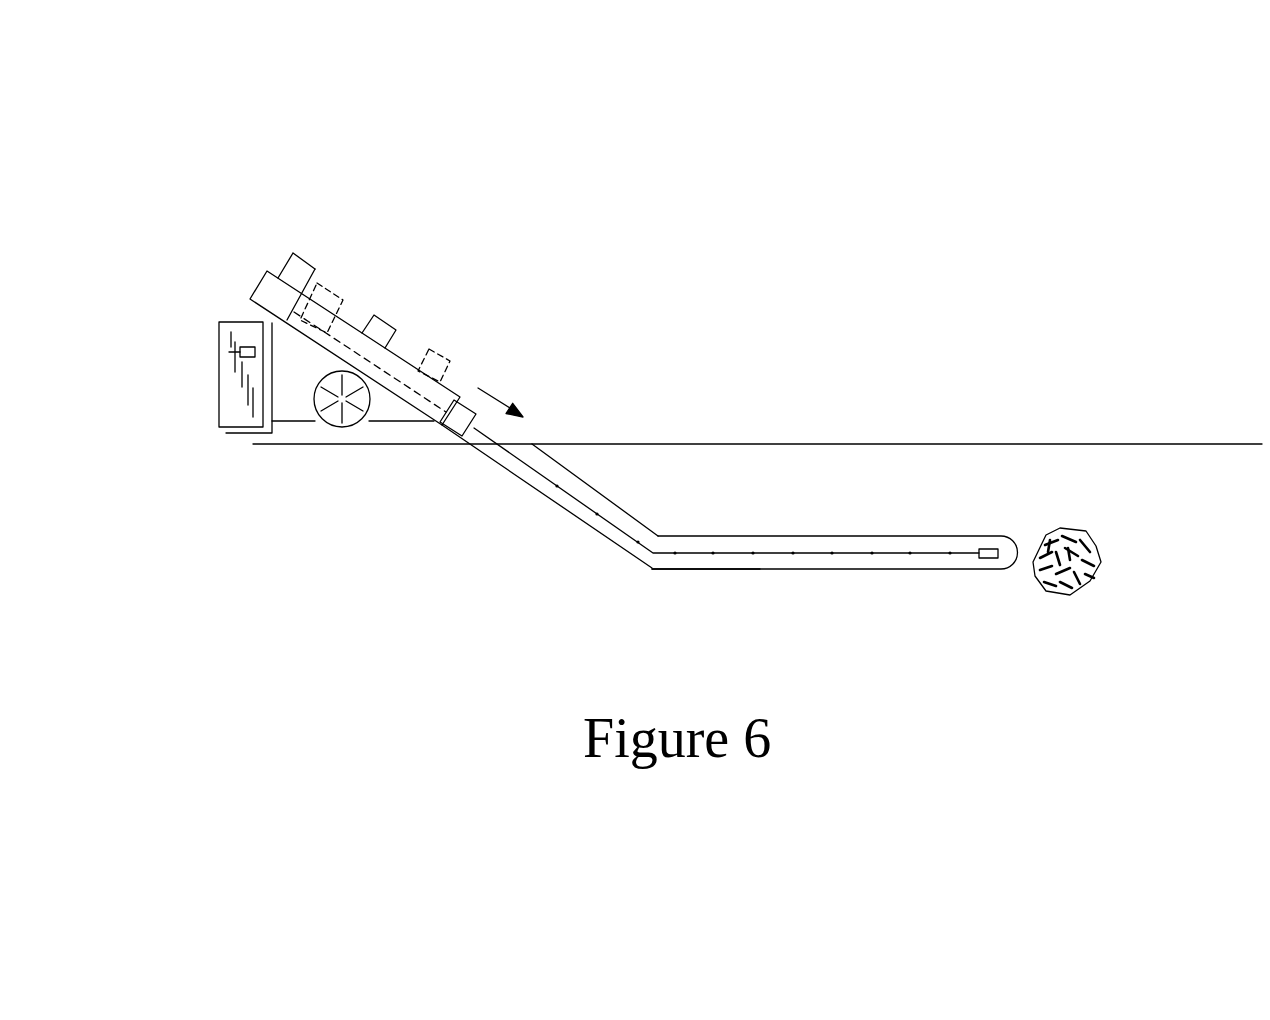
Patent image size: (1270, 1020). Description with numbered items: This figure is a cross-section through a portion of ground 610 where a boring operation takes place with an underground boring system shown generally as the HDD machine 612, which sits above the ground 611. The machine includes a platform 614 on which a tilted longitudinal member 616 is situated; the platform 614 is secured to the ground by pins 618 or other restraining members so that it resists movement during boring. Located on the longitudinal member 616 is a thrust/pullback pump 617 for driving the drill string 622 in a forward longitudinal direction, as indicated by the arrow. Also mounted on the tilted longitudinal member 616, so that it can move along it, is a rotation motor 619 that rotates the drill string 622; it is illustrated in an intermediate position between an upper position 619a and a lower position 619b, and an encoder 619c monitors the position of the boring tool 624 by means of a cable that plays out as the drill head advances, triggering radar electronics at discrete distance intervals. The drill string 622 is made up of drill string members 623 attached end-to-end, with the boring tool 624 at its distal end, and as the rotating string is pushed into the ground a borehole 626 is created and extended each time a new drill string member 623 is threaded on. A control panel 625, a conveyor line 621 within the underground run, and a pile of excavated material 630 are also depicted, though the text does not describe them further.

The ground 610 is at (1181, 494).
The ground 611 is at (1157, 443).
The HDD machine 612 is at (389, 182).
The platform 614 is at (287, 327).
The tilted longitudinal member 616 is at (313, 341).
The thrust/pullback pump 617 is at (296, 251).
The pins 618 is at (430, 450).
The rotation motor 619 is at (378, 317).
The upper position 619a is at (333, 284).
The lower position 619b is at (450, 352).
The encoder 619c is at (471, 403).
The belt 621 is at (832, 553).
The drill string 622 is at (887, 553).
The drill string member 623 is at (570, 508).
The boring tool 624 is at (991, 559).
The control panel 625 is at (229, 352).
The borehole 626 is at (693, 568).
The material pile 630 is at (1094, 565).